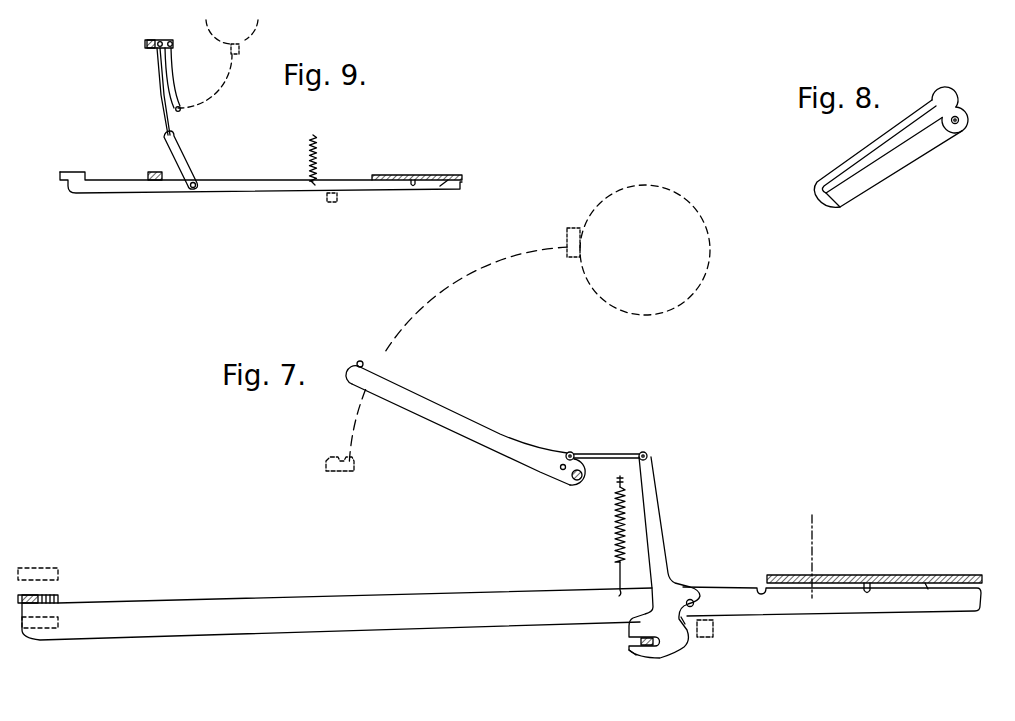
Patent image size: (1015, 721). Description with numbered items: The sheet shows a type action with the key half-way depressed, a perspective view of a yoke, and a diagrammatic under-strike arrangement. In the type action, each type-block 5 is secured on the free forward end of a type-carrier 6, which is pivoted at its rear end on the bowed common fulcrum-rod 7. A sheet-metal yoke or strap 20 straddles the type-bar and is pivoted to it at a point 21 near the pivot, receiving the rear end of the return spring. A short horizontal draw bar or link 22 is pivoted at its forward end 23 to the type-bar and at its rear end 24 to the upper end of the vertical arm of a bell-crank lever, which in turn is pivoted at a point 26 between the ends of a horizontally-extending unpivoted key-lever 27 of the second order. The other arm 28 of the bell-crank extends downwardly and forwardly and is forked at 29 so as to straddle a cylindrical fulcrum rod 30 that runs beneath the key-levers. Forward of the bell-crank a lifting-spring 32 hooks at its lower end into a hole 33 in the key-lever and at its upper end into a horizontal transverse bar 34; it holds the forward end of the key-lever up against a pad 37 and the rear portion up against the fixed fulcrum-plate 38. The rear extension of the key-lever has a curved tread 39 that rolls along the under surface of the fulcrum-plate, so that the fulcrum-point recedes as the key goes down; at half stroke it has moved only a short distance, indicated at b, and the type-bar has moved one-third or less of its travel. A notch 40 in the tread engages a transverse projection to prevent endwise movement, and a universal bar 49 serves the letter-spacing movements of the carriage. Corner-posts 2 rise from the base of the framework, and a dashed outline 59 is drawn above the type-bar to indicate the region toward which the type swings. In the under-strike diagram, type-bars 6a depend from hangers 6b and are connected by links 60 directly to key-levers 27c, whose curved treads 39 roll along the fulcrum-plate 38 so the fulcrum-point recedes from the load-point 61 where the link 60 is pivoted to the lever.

In FIG. 9, the corner-post 2 is at (313, 154).
In FIG. 7, the corner-post 2 is at (656, 522).
In FIG. 7, the type-block 5 is at (370, 372).
In FIG. 7, the type-carrier 6 is at (477, 423).
In FIG. 9, the type-bar 6a is at (170, 66).
In FIG. 9, the hanger 6b is at (145, 44).
In FIG. 7, the fulcrum-rod 7 is at (583, 473).
In FIG. 8, the yoke 20 is at (891, 168).
In FIG. 8, the pivot point of yoke 21 is at (959, 120).
In FIG. 7, the pivot point of yoke 21 is at (561, 470).
In FIG. 7, the draw bar 22 is at (622, 454).
In FIG. 7, the forward end of link 23 is at (571, 452).
In FIG. 7, the rear end of link 24 is at (647, 455).
In FIG. 7, the pivot of bell-crank lever 26 is at (694, 602).
In FIG. 7, the key-lever 27 is at (499, 604).
In FIG. 9, the key-lever 27c is at (250, 173).
In FIG. 7, the arm of bell-crank lever 28 is at (684, 637).
In FIG. 7, the fork 29 is at (636, 655).
In FIG. 7, the fulcrum rod 30 is at (641, 641).
In FIG. 7, the lifting-spring 32 is at (617, 528).
In FIG. 7, the hole in key-lever 33 is at (622, 589).
In FIG. 7, the transverse bar 34 is at (631, 482).
In FIG. 9, the pad 37 is at (145, 174).
In FIG. 9, the fulcrum-plate 38 is at (408, 175).
In FIG. 7, the fulcrum-plate 38 is at (930, 575).
In FIG. 9, the tread 39 is at (440, 179).
In FIG. 7, the tread 39 is at (936, 595).
In FIG. 9, the notch 40 is at (413, 183).
In FIG. 7, the notch 40 is at (871, 593).
In FIG. 9, the universal bar 49 is at (344, 199).
In FIG. 7, the universal bar 49 is at (713, 628).
In FIG. 9, the wheel path 59 is at (222, 64).
In FIG. 7, the wheel path 59 is at (518, 328).
In FIG. 9, the link 60 is at (186, 155).
In FIG. 9, the load-point 61 is at (196, 183).
In FIG. 7, the fulcrum-point position b is at (813, 556).